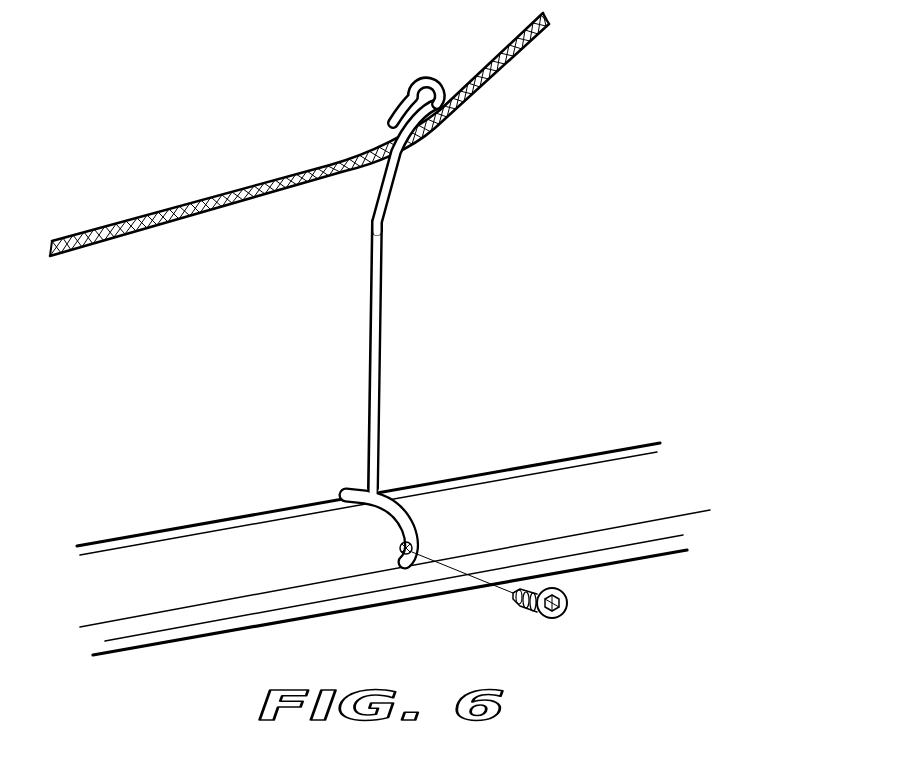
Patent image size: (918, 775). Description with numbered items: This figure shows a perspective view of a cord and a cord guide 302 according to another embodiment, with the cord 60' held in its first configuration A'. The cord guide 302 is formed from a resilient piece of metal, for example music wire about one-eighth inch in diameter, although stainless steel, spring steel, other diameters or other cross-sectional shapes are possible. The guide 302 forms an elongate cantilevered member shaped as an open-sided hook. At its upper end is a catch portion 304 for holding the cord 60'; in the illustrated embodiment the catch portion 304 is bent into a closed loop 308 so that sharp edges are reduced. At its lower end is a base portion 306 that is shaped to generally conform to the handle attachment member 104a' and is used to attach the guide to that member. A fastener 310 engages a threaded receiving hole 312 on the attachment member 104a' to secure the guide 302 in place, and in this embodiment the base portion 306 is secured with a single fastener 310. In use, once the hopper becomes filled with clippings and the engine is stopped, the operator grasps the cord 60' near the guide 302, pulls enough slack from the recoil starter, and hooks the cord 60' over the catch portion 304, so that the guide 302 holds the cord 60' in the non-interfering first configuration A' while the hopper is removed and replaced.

The cord 60' is at (299, 134).
The first configuration A' is at (509, 75).
The handle attachment member 104a' is at (393, 549).
The cord guide 302 is at (368, 338).
The catch portion 304 is at (397, 187).
The base portion 306 is at (428, 500).
The closed loop 308 is at (420, 85).
The fastener 310 is at (568, 603).
The threaded receiving hole 312 is at (403, 557).